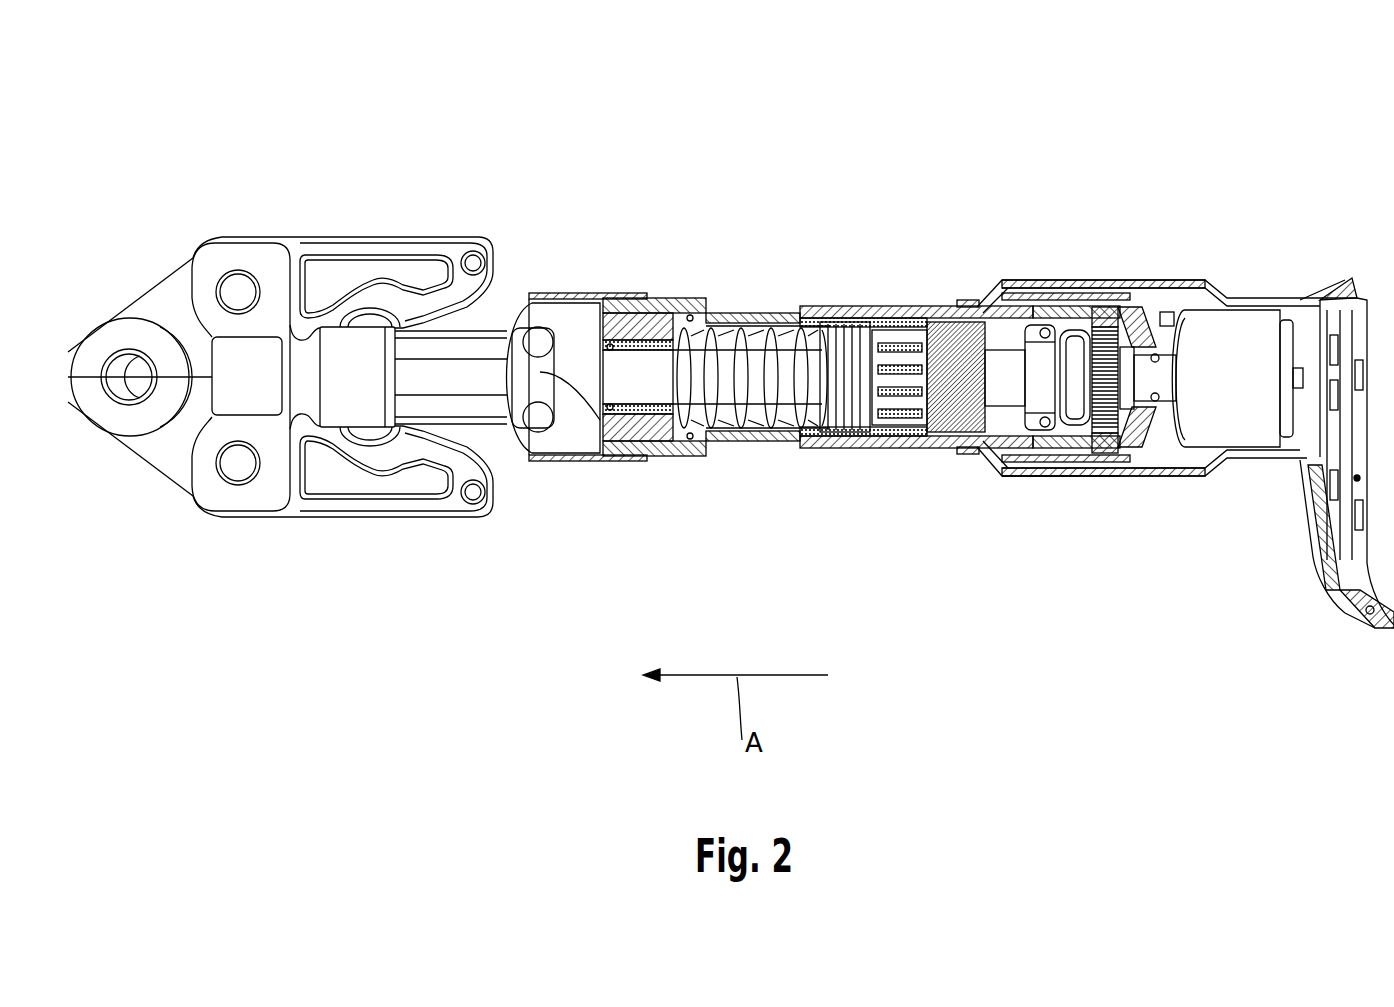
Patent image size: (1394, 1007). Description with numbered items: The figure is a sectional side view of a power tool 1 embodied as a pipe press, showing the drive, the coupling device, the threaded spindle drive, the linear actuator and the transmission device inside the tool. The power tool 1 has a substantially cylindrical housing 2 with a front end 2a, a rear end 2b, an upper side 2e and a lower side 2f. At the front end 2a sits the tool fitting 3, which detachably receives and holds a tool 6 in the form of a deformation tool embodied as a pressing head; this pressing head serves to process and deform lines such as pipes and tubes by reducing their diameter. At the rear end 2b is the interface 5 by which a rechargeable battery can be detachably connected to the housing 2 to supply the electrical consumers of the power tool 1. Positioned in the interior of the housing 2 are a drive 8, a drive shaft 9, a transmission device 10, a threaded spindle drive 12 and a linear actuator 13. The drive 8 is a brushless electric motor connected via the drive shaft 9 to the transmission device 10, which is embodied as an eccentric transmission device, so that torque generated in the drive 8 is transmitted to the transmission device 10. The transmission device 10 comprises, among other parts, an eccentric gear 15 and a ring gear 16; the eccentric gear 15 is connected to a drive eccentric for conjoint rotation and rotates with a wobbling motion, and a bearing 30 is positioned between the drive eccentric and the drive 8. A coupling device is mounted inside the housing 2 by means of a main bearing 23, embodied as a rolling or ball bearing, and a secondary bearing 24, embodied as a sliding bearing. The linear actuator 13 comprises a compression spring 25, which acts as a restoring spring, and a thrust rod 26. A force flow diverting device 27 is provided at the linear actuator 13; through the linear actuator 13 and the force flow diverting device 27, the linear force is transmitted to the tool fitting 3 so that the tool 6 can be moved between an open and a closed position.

The power tool 1 is at (760, 110).
The housing 2 is at (1157, 280).
The front end 2a is at (548, 293).
The rear end 2b is at (1336, 278).
The upper side 2e is at (957, 302).
The lower side 2f is at (1052, 478).
The tool fitting 3 is at (433, 410).
The interface 5 is at (1345, 568).
The tool 6 is at (167, 302).
The drive 8 is at (1245, 410).
The drive shaft 9 is at (1150, 400).
The transmission device 10 is at (1095, 327).
The threaded spindle drive 12 is at (963, 380).
The linear actuator 13 is at (637, 375).
The eccentric gear 15 is at (1105, 400).
The ring gear 16 is at (1085, 470).
The main bearing 23 is at (1000, 305).
The secondary bearing 24 is at (1040, 305).
The compression spring 25 is at (750, 415).
The thrust rod 26 is at (660, 397).
The force flow diverting device 27 is at (542, 374).
The bearing 30 is at (1170, 312).